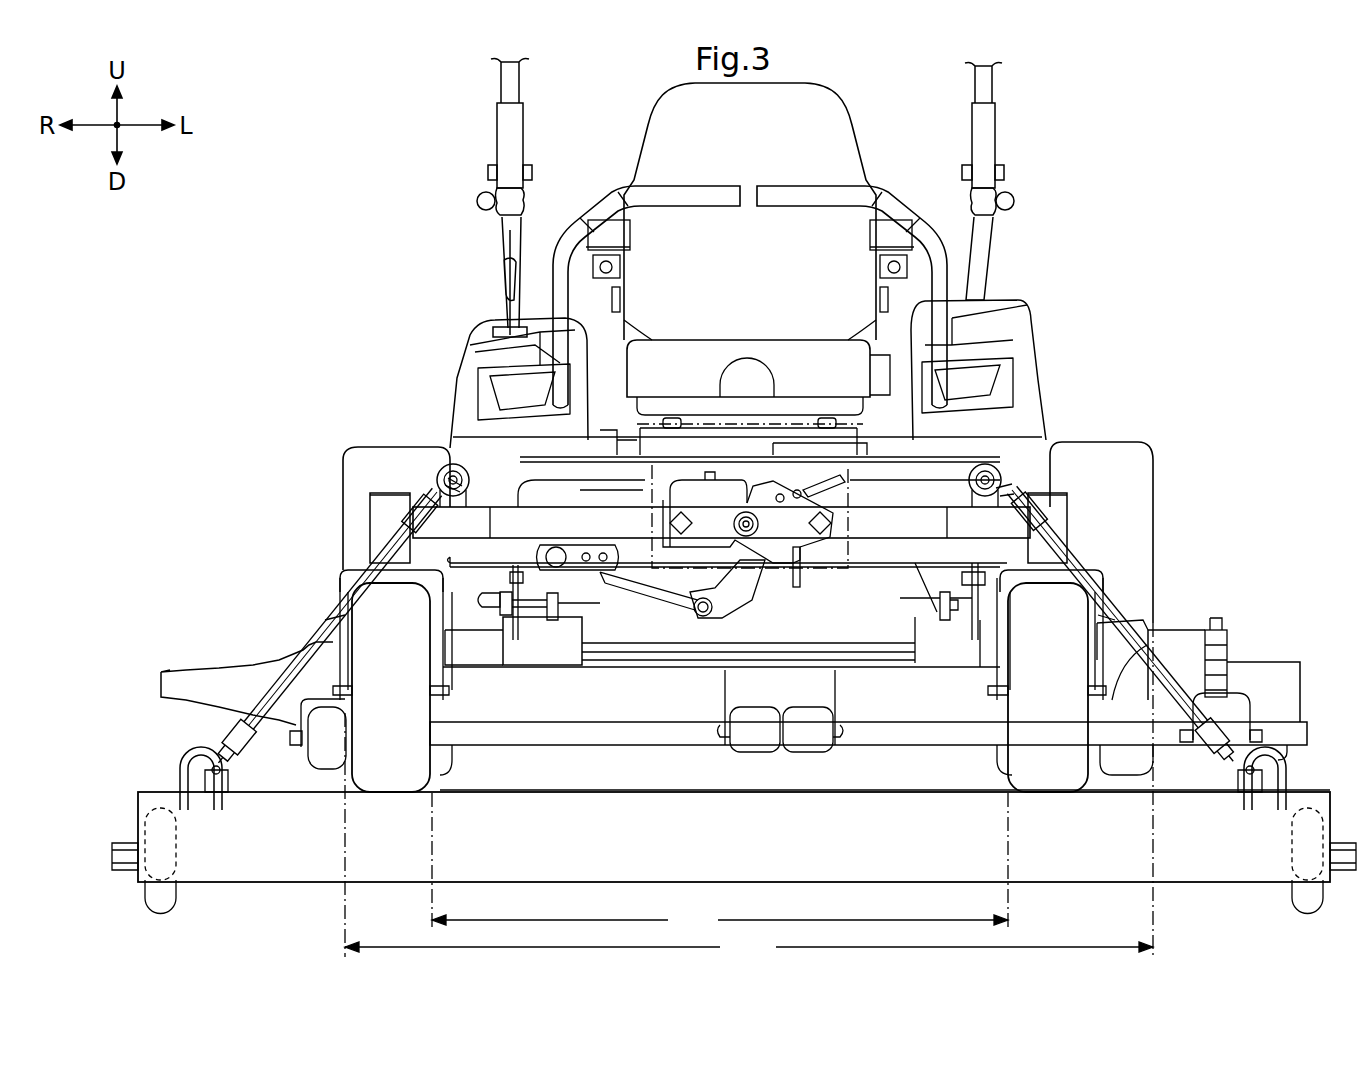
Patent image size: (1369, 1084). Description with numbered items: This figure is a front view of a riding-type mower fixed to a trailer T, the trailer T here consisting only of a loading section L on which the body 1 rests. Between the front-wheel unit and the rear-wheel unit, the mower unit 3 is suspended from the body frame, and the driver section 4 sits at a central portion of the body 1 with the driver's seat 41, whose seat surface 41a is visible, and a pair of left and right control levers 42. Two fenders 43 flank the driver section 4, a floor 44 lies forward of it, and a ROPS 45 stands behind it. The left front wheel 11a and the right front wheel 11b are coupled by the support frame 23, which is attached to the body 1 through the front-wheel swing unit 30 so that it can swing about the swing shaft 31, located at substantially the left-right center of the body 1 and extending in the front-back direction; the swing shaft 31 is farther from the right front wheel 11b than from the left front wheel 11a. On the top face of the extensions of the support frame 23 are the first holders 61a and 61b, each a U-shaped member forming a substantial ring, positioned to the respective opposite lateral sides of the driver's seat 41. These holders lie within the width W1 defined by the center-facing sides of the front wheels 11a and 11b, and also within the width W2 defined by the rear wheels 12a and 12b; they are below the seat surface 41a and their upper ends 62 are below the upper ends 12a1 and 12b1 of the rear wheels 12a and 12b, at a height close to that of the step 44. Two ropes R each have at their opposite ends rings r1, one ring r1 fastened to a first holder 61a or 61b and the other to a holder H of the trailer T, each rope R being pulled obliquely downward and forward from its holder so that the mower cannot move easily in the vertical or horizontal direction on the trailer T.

The body 1 is at (407, 268).
The mower unit 3 is at (1294, 658).
The driver section 4 is at (886, 126).
The left front wheel 11a is at (1048, 775).
The right front wheel 11b is at (388, 775).
The rear wheel 12a is at (1143, 513).
The upper end of rear wheel 12a1 is at (1078, 442).
The rear wheel 12b is at (345, 503).
The upper end of rear wheel 12b1 is at (397, 445).
The support frame 23 is at (883, 525).
The front-wheel swing unit 30 is at (693, 495).
The swing shaft 31 is at (740, 520).
The driver's seat 41 is at (657, 135).
The seat surface 41a is at (697, 338).
The control levers 42 is at (776, 202).
The fender 43 is at (1033, 340).
The floor 44 is at (753, 455).
The ROPS 45 is at (990, 123).
The first holder 61a is at (1012, 450).
The first holder 61b is at (437, 462).
The upper end of first holder 62 is at (455, 468).
The ring r1 is at (462, 488).
The rope R is at (333, 617).
The holder H is at (180, 770).
The trailer T is at (132, 825).
The loading section L is at (613, 780).
The width W1 is at (720, 864).
The width W2 is at (749, 793).